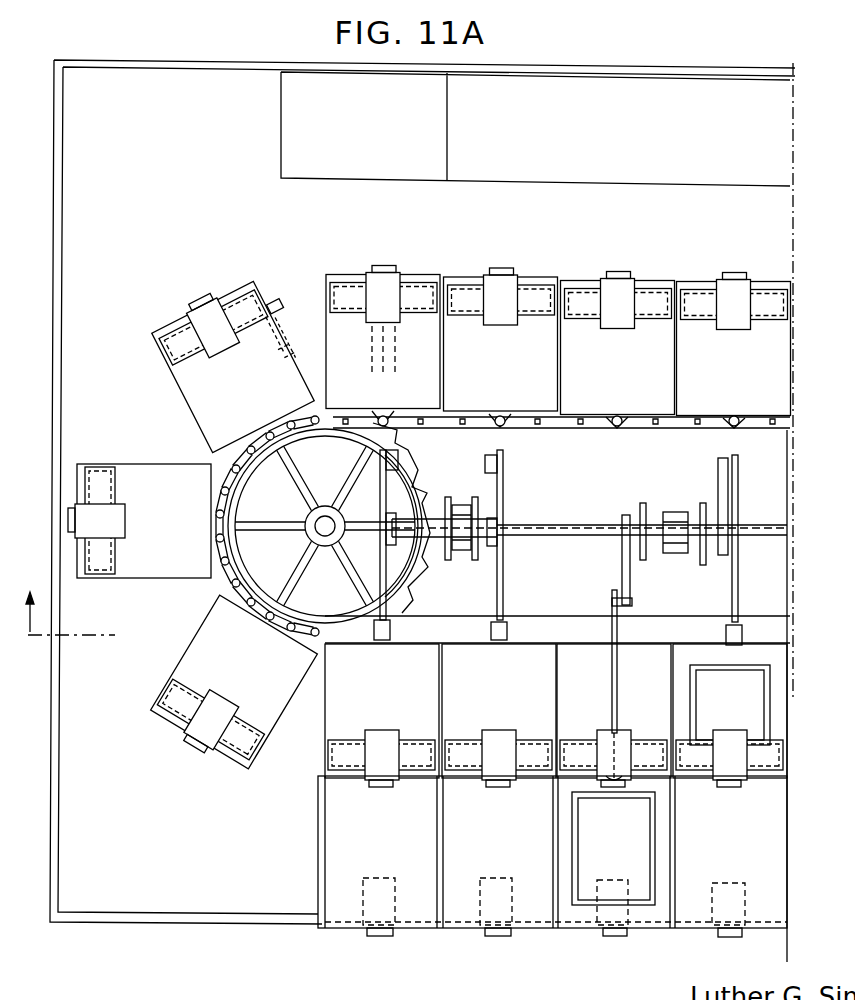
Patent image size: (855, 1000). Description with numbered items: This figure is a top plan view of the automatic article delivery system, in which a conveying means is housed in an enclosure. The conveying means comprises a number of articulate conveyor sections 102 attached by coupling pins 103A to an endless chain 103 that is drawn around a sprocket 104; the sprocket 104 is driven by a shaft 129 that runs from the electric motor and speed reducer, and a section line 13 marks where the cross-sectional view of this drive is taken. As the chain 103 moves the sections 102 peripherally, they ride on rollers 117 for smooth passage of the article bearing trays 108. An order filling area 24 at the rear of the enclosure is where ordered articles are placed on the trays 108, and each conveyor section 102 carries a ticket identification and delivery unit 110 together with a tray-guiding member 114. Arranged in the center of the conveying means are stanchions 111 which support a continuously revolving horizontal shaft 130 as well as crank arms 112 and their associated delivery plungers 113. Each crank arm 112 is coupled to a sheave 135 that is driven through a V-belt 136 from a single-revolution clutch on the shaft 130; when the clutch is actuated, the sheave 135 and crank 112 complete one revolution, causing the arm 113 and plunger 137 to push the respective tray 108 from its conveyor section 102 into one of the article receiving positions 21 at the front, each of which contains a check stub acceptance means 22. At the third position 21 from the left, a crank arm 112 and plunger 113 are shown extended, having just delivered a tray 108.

The section line 13 is at (67, 603).
The article receiving position 21 is at (368, 854).
The check stub acceptance means 22 is at (395, 932).
The order filling area 24 is at (615, 146).
The articulate conveyor section 102 is at (258, 290).
The endless chain 103 is at (243, 583).
The coupling pin 103A is at (228, 525).
The sprocket 104 is at (302, 484).
The tray 108 is at (690, 695).
The ticket identification and delivery unit 110 is at (388, 268).
The stanchion 111 is at (460, 505).
The crank arm 112 is at (488, 474).
The delivery plunger 113 is at (380, 490).
The slide bar 114 is at (420, 288).
The roller 117 is at (283, 303).
The shaft 129 is at (325, 546).
The horizontal shaft 130 is at (545, 524).
The sheave 135 is at (447, 563).
The V-belt 136 is at (475, 528).
The plunger 137 is at (504, 626).